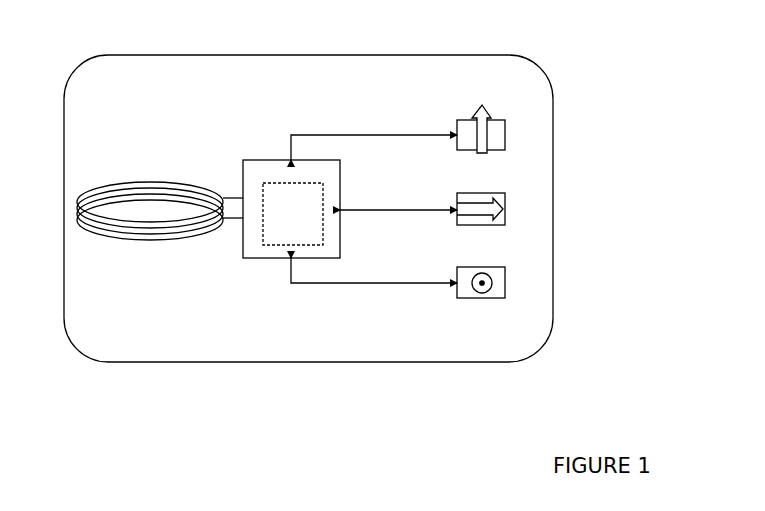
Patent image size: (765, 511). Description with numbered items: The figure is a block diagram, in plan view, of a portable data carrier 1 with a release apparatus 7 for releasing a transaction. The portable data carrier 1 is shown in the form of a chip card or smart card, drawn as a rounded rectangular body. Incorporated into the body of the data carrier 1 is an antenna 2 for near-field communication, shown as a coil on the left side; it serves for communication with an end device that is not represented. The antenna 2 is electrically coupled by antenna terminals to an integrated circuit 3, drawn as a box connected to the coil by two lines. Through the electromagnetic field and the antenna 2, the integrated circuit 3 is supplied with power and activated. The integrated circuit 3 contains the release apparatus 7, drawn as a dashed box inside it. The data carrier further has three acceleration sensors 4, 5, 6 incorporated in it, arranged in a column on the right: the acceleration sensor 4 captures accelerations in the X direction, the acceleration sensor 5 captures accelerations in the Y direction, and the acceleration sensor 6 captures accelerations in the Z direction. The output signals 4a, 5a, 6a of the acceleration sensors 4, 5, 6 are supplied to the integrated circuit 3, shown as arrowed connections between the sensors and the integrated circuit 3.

The portable data carrier 1 is at (197, 56).
The antenna 2 is at (135, 182).
The integrated circuit 3 is at (253, 160).
The release apparatus 7 is at (290, 183).
The acceleration sensor 4 is at (505, 120).
The acceleration sensor 5 is at (505, 193).
The acceleration sensor 6 is at (505, 267).
The output signal 4a is at (374, 133).
The output signal 5a is at (398, 198).
The output signal 6a is at (374, 269).